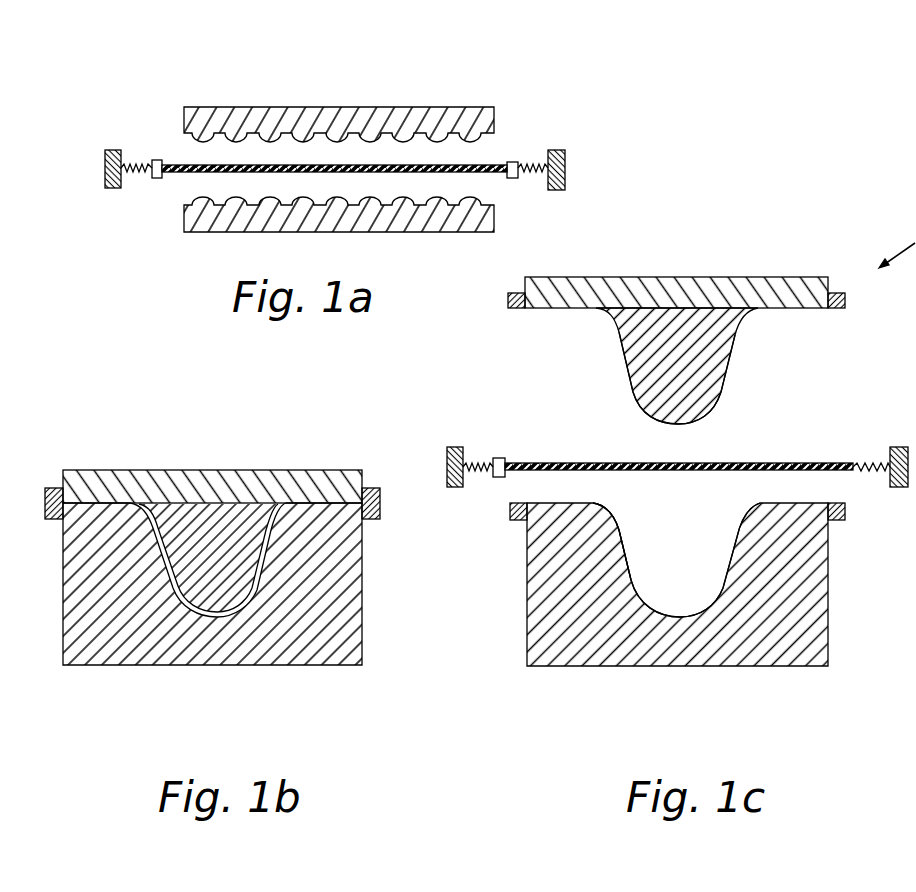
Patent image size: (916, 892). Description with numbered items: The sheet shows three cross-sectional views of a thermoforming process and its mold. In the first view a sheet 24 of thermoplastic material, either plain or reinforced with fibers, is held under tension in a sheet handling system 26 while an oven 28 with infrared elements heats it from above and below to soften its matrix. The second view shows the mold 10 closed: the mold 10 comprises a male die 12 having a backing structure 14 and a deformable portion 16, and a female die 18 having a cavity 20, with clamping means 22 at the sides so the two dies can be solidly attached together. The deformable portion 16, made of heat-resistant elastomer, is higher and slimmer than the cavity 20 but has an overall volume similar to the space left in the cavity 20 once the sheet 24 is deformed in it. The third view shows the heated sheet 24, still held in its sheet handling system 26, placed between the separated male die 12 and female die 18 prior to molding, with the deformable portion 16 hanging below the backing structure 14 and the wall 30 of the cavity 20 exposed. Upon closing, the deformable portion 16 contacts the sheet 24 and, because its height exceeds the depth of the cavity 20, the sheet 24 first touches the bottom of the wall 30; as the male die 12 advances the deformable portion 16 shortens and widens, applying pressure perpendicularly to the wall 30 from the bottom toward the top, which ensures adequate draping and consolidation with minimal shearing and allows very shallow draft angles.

In FIG. 1B, the mold 10 is at (366, 434).
In FIG. 1B, the male die 12 is at (208, 488).
In FIG. 1C, the male die 12 is at (795, 290).
In FIG. 1C, the backing structure 14 is at (670, 290).
In FIG. 1B, the deformable portion 16 is at (225, 575).
In FIG. 1C, the deformable portion 16 is at (690, 367).
In FIG. 1B, the female die 18 is at (112, 625).
In FIG. 1C, the female die 18 is at (577, 625).
In FIG. 1C, the cavity 20 is at (697, 612).
In FIG. 1C, the clamping means 22 is at (838, 522).
In FIG. 1A, the sheet 24 is at (483, 169).
In FIG. 1A, the sheet handling system 26 is at (112, 189).
In FIG. 1A, the oven 28 is at (190, 123).
In FIG. 1C, the wall 30 is at (627, 558).